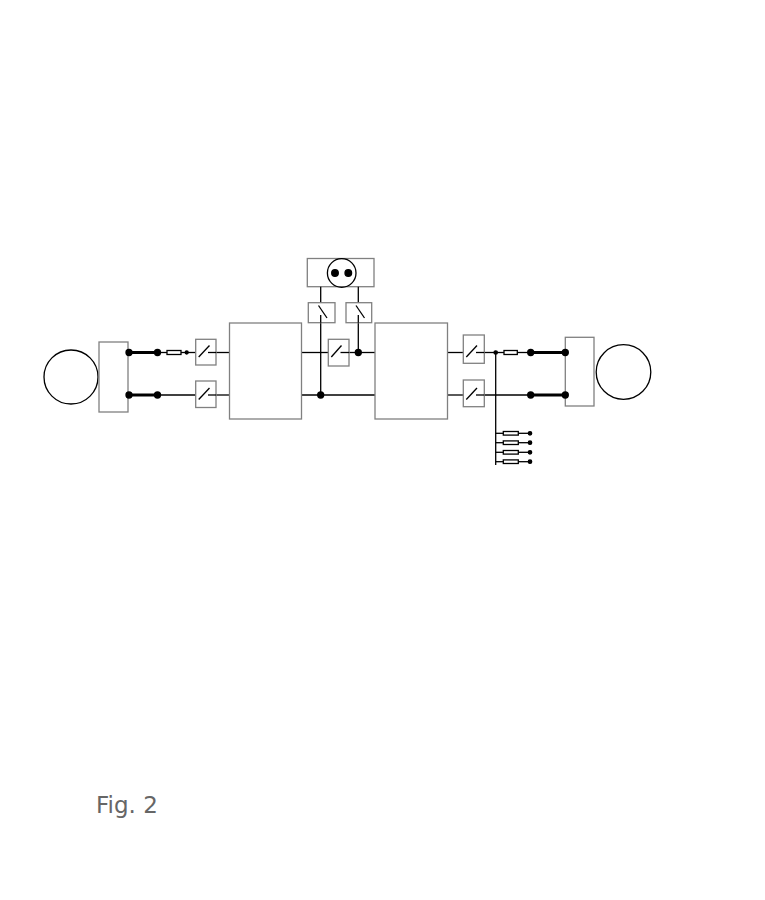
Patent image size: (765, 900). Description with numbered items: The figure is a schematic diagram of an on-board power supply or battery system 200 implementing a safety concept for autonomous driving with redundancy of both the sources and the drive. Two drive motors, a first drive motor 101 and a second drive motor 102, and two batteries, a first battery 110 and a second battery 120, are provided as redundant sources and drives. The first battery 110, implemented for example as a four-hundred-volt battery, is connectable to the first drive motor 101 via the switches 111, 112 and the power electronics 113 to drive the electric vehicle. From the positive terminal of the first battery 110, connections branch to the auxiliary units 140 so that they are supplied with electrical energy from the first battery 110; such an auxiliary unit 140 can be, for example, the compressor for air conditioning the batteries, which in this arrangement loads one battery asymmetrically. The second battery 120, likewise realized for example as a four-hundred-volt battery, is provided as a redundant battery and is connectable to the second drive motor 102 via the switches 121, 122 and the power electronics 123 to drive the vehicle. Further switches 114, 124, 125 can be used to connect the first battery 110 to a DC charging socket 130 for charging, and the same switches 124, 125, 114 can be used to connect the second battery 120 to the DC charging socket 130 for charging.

The electrical drive system of the vehicle 200 is at (103, 51).
The first drive motor 101 is at (620, 330).
The second drive motor 102 is at (60, 330).
The first battery 110 is at (424, 318).
The switch 111 is at (473, 332).
The switch 112 is at (475, 412).
The power electronics 113 is at (575, 323).
The switch 114 is at (367, 300).
The second battery 120 is at (232, 320).
The switch 121 is at (198, 333).
The switch 122 is at (202, 412).
The power electronics 123 is at (113, 290).
The switch 124 is at (306, 309).
The switch 125 is at (339, 367).
The DC charging socket 130 is at (338, 228).
The auxiliary units 140 is at (570, 474).